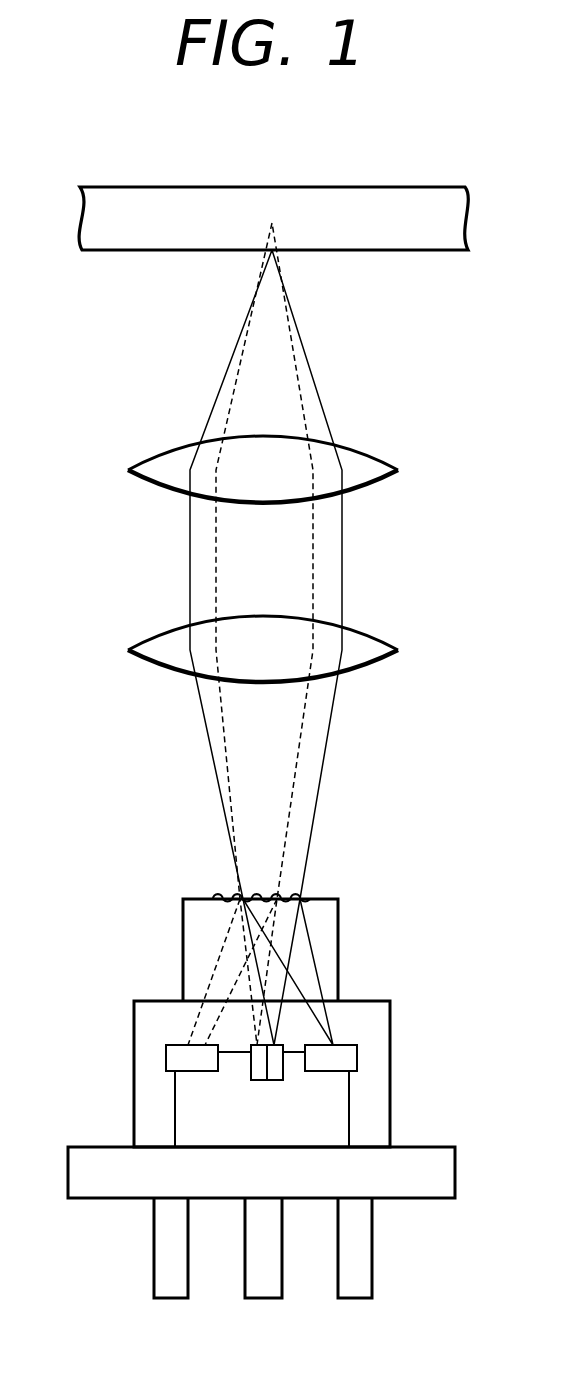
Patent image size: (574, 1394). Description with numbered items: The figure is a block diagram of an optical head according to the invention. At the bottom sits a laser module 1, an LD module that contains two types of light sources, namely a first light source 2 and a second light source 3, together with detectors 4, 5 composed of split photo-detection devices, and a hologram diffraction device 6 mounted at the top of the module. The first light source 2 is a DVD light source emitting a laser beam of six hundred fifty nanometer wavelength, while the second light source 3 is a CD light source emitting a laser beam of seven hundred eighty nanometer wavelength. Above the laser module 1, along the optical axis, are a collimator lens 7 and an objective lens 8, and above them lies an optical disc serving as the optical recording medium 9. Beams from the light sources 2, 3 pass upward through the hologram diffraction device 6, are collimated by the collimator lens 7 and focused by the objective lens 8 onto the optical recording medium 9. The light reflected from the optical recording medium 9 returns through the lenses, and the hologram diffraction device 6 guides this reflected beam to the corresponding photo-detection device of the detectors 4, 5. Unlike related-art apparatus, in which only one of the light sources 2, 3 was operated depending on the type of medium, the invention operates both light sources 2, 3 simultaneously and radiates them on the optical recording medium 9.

The laser module 1 is at (430, 1188).
The first light source 2 is at (283, 1074).
The second light source 3 is at (251, 1073).
The detector 4 is at (350, 1045).
The detector 5 is at (168, 1045).
The hologram diffraction device 6 is at (307, 897).
The collimator lens 7 is at (377, 660).
The objective lens 8 is at (383, 480).
The optical recording medium 9 is at (450, 252).